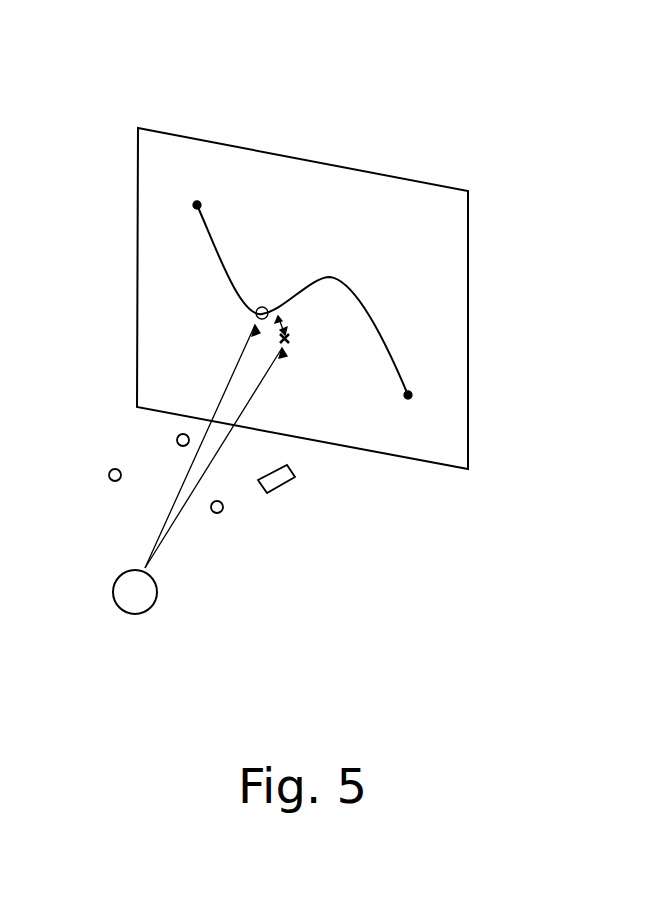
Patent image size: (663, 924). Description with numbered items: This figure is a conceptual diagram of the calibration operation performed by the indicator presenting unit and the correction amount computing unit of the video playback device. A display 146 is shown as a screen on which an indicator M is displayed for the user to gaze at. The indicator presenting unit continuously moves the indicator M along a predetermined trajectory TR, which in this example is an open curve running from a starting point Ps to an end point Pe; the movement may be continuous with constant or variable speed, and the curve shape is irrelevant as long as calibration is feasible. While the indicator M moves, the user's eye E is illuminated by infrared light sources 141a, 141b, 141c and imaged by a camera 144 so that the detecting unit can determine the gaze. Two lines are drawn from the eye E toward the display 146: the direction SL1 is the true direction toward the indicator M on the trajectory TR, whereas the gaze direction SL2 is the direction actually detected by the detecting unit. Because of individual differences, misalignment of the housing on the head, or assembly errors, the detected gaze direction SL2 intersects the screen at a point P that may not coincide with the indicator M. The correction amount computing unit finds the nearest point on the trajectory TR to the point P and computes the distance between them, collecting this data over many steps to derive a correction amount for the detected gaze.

The display 146 is at (443, 186).
The infrared light source 141a is at (176, 440).
The infrared light source 141b is at (221, 513).
The infrared light source 141c is at (108, 475).
The camera 144 is at (290, 487).
The eye E is at (112, 602).
The indicator M is at (262, 306).
The detected gaze point P is at (293, 340).
The trajectory TR is at (373, 318).
The direction towards the trajectory SL1 is at (226, 394).
The gaze direction SL2 is at (250, 400).
The starting point Ps is at (197, 205).
The end point Pe is at (408, 395).